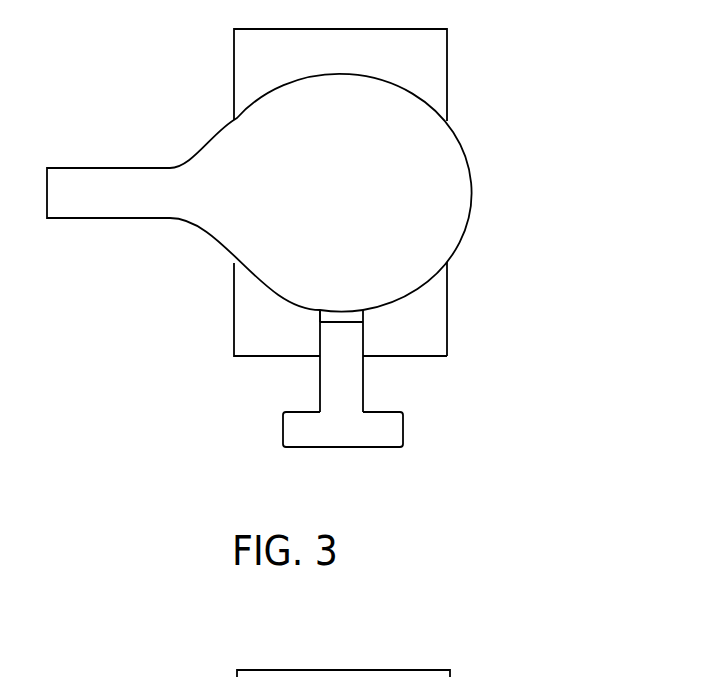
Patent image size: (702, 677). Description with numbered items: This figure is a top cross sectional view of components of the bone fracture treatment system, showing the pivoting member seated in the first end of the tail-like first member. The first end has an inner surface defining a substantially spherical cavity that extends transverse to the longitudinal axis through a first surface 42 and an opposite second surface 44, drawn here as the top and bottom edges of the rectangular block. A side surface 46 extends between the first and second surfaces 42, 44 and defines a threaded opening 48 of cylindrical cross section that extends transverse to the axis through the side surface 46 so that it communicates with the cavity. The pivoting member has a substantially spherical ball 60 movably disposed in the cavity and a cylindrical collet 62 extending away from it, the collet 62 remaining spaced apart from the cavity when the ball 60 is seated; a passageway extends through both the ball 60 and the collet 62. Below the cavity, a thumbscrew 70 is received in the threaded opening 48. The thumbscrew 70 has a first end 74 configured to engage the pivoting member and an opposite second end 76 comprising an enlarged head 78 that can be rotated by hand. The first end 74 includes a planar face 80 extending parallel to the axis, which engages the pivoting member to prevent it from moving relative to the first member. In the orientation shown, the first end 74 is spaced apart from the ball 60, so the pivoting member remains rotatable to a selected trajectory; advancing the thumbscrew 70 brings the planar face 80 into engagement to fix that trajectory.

The first surface 42 is at (232, 68).
The second surface 44 is at (448, 305).
The side surface 46 is at (443, 357).
The threaded opening 48 is at (376, 318).
The ball 60 is at (452, 160).
The collet 62 is at (73, 203).
The thumbscrew 70 is at (320, 431).
The first end 74 is at (330, 343).
The second end 76 is at (285, 449).
The enlarged head 78 is at (393, 450).
The planar face 80 is at (320, 312).